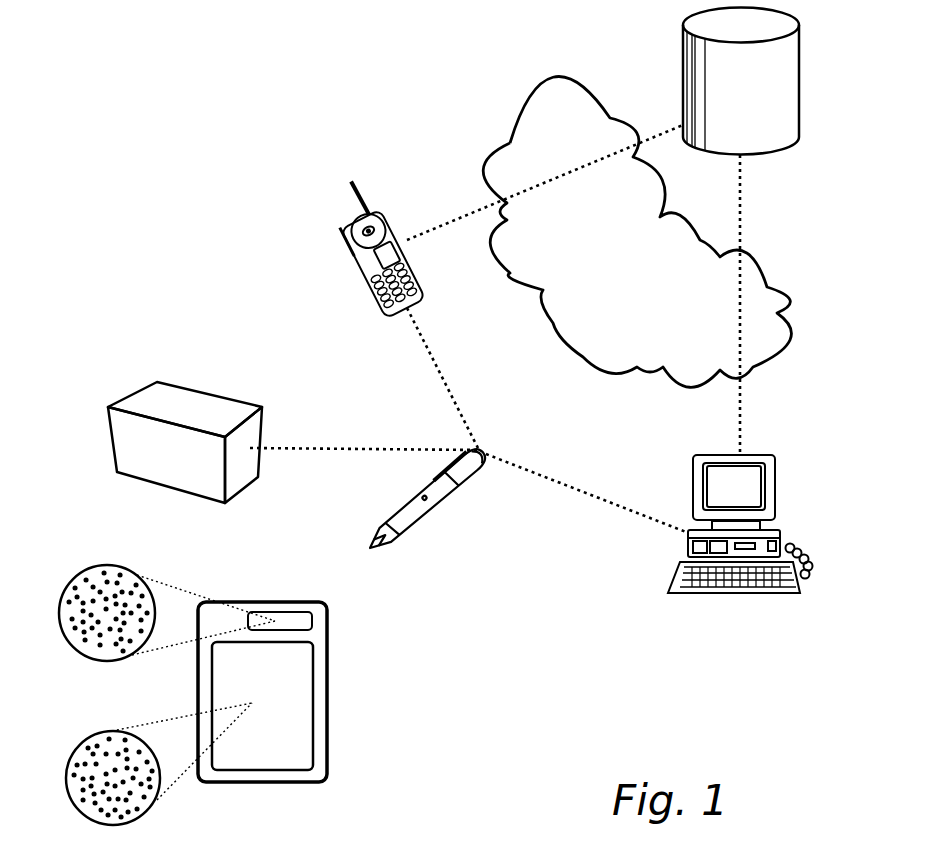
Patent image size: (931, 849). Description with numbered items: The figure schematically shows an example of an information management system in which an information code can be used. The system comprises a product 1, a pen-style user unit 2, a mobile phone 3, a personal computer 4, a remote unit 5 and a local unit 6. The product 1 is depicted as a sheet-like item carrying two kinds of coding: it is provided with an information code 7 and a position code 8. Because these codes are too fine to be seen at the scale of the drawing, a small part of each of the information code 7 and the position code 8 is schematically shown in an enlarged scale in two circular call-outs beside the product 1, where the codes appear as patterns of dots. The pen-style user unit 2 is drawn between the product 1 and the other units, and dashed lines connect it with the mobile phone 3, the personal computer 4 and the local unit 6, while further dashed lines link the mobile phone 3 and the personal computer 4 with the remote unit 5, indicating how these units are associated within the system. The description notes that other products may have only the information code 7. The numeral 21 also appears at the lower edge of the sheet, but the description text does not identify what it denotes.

The product 1 is at (328, 697).
The pen-style user unit 2 is at (437, 507).
The mobile phone 3 is at (350, 218).
The personal computer 4 is at (775, 487).
The remote unit 5 is at (798, 85).
The local unit 6 is at (193, 402).
The information code 7 is at (292, 620).
The position code 8 is at (302, 747).
The position-coding pattern 21 is at (322, 843).